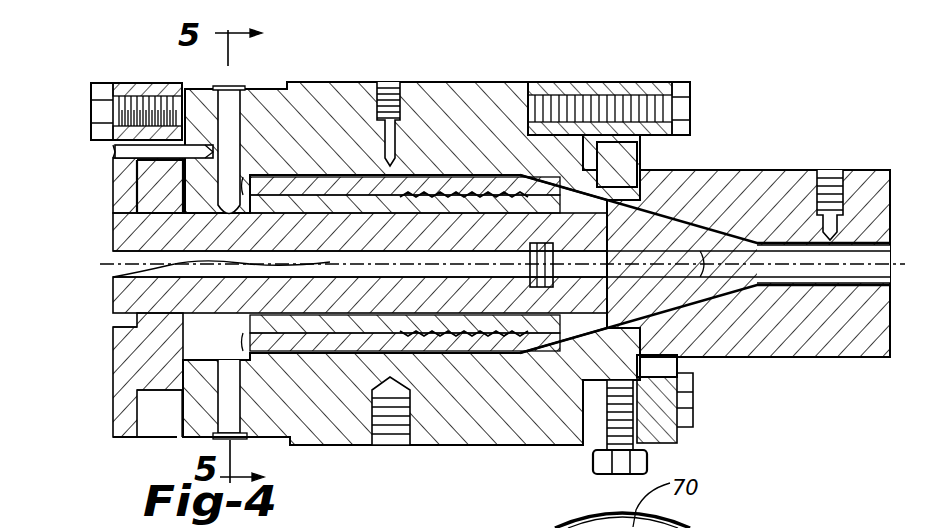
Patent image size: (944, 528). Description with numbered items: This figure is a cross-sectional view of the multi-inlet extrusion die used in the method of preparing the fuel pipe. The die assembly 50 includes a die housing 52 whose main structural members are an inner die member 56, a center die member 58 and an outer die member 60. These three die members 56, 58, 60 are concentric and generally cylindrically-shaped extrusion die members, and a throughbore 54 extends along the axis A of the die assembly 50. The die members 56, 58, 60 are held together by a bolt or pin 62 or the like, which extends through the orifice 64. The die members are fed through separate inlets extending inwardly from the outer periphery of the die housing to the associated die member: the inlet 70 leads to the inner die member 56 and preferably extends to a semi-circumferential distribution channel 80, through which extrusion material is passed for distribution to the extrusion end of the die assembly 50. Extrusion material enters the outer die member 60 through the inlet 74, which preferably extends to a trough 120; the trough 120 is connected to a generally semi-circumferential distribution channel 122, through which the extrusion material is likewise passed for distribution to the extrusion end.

The die assembly 50 is at (676, 70).
The die housing 52 is at (530, 82).
The throughbore 54 is at (493, 272).
The inner die member 56 is at (113, 318).
The center die member 58 is at (128, 213).
The outer die member 60 is at (323, 178).
The bolt or pin 62 is at (113, 156).
The orifice 64 is at (113, 140).
The inlet 70 is at (245, 86).
The inlet 74 is at (245, 442).
The semi-circumferential distribution channel 80 is at (113, 277).
The trough 120 is at (183, 440).
The semi-circumferential distribution channel 122 is at (323, 383).
The axis A is at (113, 262).